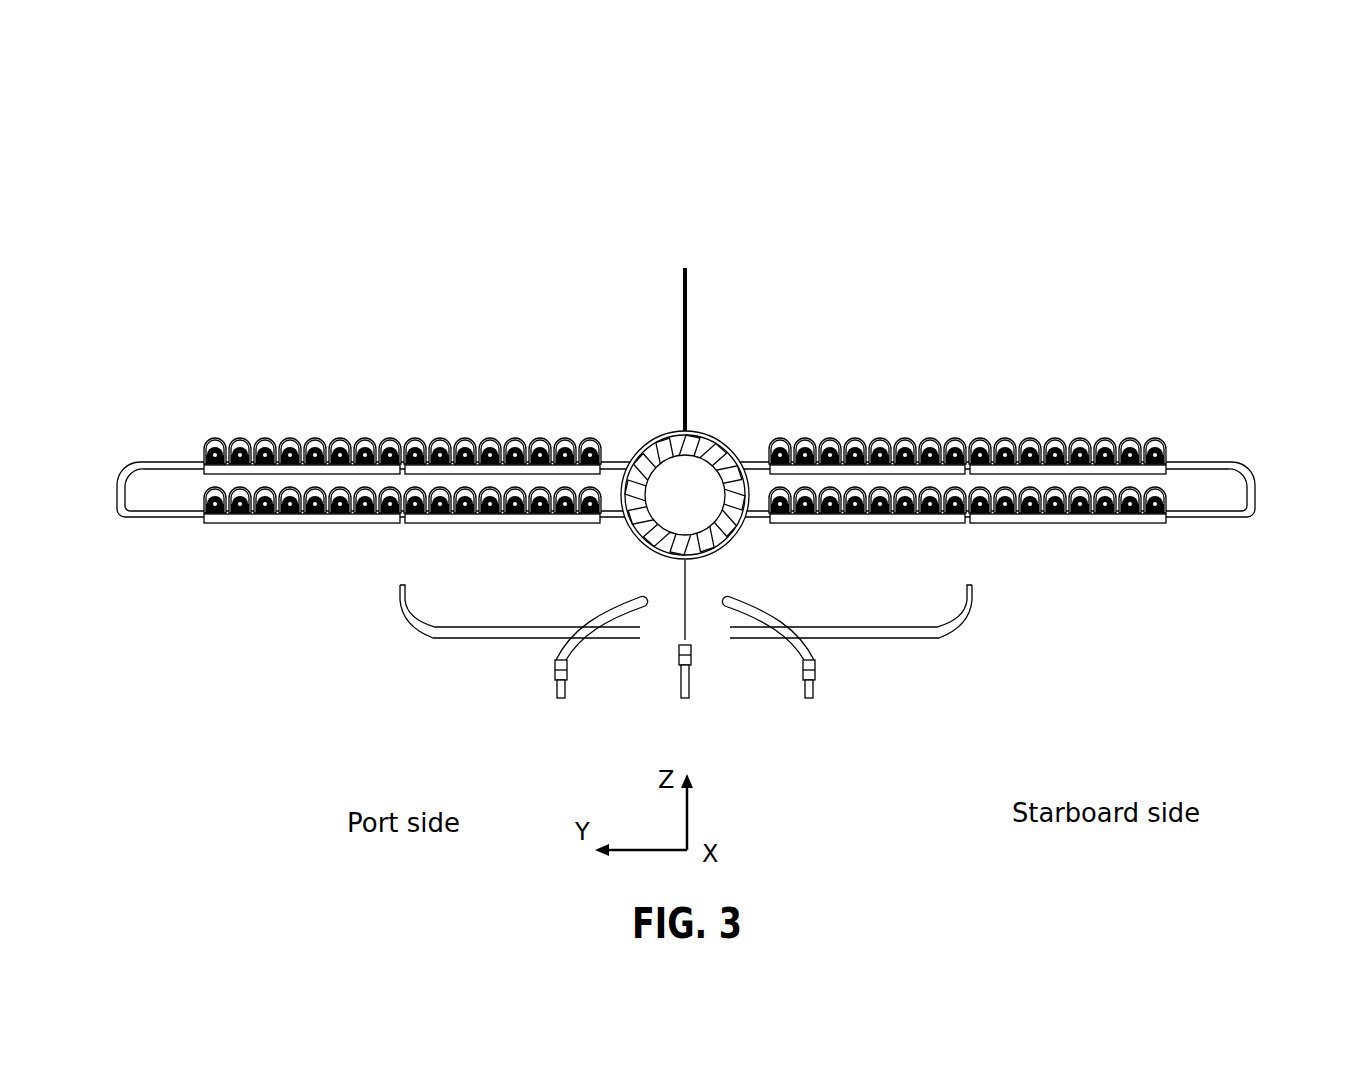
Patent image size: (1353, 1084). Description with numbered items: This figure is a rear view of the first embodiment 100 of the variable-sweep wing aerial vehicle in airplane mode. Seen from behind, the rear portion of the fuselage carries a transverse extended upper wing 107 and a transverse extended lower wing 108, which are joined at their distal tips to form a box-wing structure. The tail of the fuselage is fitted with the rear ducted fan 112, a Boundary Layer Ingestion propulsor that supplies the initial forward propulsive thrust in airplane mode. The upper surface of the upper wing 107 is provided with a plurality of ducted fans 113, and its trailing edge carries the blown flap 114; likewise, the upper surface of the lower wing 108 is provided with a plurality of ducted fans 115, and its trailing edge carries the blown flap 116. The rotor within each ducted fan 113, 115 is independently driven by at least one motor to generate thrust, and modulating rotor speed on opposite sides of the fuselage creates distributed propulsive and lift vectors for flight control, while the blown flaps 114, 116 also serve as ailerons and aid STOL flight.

The first embodiment of the variable-sweep wing aerial vehicle 100 is at (675, 158).
The upper wing 107 is at (178, 458).
The lower wing 108 is at (178, 518).
The rear ducted fan 112 is at (650, 442).
The ducted fans 113 is at (585, 442).
The blown flap 114 is at (208, 472).
The ducted fans 115 is at (580, 513).
The blown flap 116 is at (360, 525).